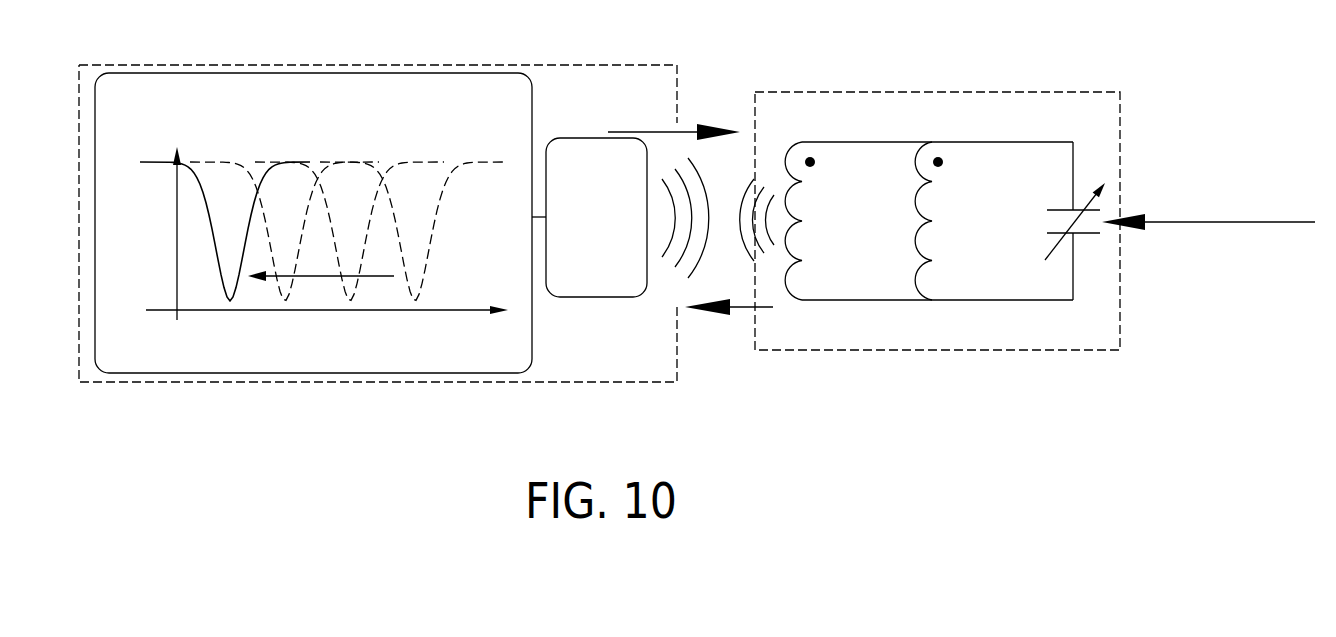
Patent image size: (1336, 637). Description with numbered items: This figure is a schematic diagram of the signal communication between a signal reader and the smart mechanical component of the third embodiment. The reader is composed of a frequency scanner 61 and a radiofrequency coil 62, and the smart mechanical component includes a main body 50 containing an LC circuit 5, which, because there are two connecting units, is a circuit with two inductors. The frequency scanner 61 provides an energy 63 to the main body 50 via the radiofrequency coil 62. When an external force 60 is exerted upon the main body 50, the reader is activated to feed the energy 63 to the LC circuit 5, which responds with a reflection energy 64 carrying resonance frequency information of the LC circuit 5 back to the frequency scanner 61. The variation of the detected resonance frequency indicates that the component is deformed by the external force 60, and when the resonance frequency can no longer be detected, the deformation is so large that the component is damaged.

The LC circuit 5 is at (865, 142).
The main body 50 is at (972, 197).
The external force 60 is at (1236, 222).
The frequency scanner 61 is at (333, 73).
The radiofrequency coil 62 is at (585, 138).
The energy 63 is at (685, 132).
The reflection energy 64 is at (738, 307).